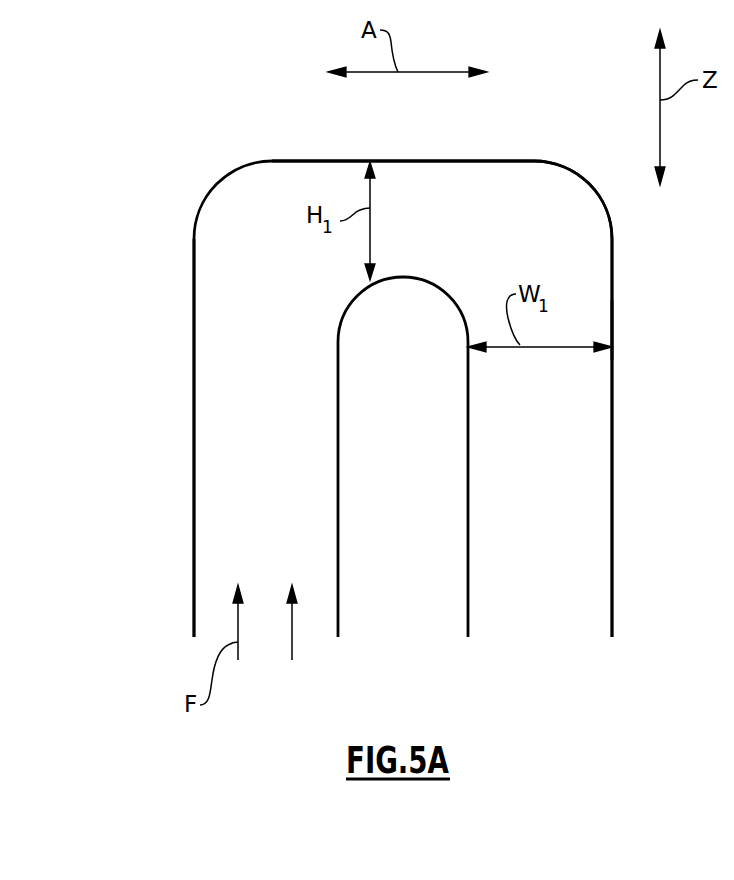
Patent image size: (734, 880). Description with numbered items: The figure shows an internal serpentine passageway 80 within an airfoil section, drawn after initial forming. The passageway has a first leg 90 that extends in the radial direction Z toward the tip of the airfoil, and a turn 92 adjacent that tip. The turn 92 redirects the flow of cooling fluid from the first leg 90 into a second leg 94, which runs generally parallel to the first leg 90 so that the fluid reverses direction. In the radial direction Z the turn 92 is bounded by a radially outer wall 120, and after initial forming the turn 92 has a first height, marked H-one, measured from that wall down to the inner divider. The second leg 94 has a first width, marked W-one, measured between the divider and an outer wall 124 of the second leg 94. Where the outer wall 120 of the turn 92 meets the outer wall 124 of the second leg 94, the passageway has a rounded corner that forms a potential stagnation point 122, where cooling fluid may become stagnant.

The serpentine passageway 80 is at (163, 423).
The first leg 90 is at (245, 487).
The turn 92 is at (418, 246).
The second leg 94 is at (573, 500).
The radially outer wall 120 is at (447, 162).
The potential stagnation point 122 is at (557, 197).
The outer wall of the second leg 124 is at (609, 326).